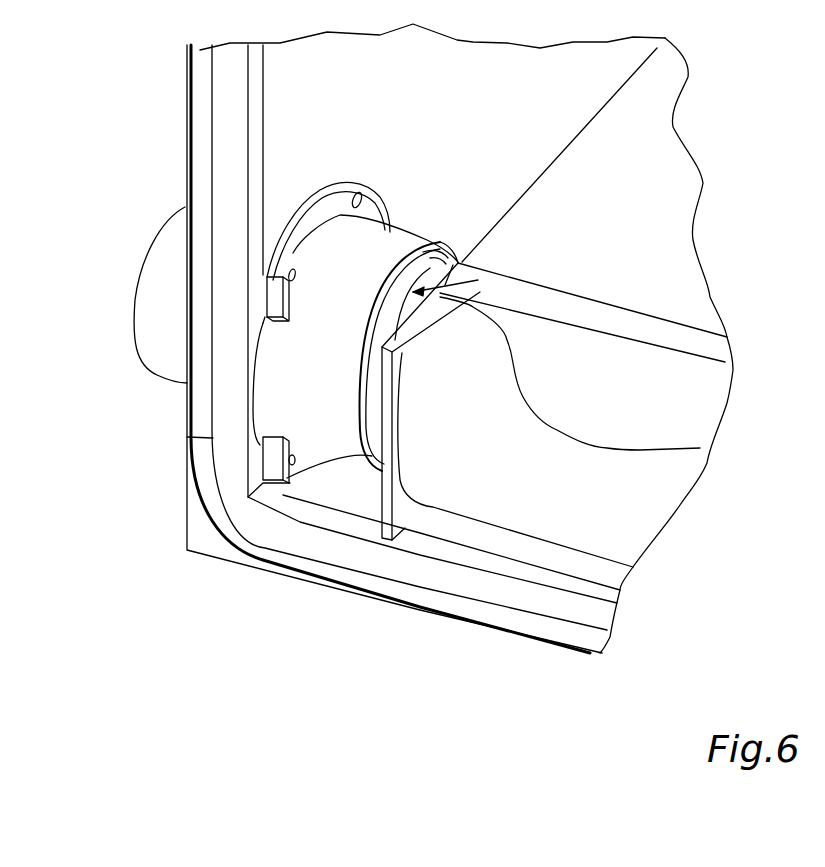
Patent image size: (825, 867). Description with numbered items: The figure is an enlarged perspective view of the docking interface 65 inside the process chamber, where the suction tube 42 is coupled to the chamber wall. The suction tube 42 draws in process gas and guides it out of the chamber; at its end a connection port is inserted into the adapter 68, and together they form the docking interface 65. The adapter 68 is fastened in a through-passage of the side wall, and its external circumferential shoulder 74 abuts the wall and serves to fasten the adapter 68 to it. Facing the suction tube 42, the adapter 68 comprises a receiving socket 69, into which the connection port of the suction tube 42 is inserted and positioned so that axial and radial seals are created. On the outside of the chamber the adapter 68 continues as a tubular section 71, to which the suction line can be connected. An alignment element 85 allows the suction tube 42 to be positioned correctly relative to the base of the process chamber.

The suction tube 42 is at (480, 403).
The docking interface 65 is at (690, 447).
The adapter 68 is at (345, 443).
The receiving socket 69 is at (302, 383).
The tubular section 71 is at (147, 298).
The external circumferential shoulder 74 is at (296, 228).
The alignment element 85 is at (405, 530).